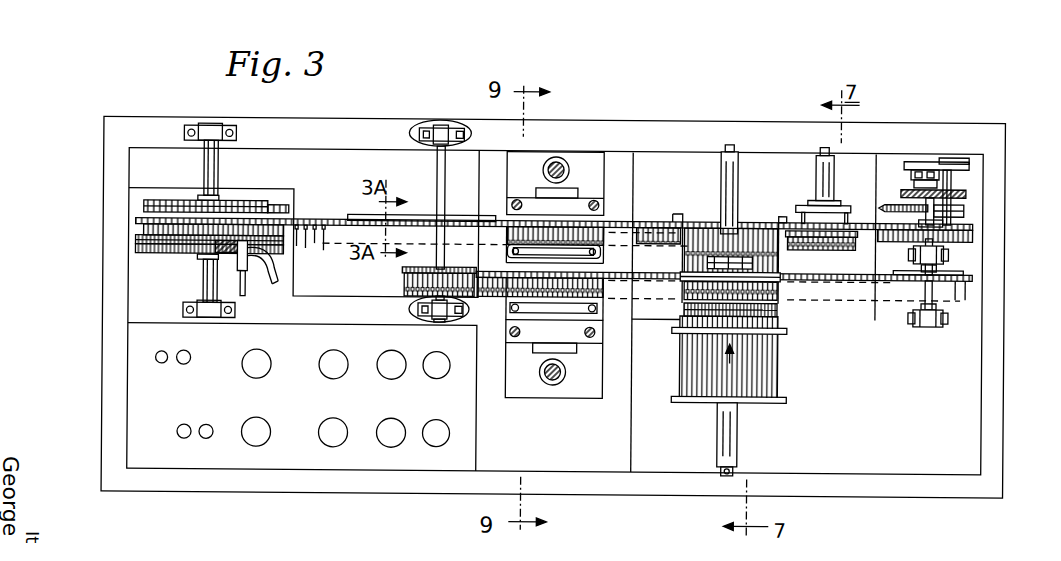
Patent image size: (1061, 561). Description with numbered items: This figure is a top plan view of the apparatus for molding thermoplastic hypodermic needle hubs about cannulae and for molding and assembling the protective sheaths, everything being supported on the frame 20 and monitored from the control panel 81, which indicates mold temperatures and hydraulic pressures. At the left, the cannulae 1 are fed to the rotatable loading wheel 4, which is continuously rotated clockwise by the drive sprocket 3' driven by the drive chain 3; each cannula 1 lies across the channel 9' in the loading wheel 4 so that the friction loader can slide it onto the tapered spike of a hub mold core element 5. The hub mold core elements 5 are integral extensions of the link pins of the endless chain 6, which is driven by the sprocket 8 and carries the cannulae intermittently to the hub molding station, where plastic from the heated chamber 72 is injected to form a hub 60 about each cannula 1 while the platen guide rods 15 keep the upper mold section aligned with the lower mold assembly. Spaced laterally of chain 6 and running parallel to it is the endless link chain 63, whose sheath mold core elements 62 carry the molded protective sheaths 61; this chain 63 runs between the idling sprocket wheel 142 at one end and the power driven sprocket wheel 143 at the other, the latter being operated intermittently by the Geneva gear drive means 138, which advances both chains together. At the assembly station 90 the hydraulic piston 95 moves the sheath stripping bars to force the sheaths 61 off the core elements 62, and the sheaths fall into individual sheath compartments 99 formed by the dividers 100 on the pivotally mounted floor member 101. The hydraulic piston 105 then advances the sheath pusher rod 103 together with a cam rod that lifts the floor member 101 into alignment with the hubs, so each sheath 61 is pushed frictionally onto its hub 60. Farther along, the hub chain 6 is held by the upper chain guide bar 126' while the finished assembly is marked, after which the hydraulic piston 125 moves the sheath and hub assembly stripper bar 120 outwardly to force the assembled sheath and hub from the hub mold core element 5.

The hypodermic cannula 1 is at (307, 238).
The drive chain 3 is at (219, 168).
The drive sprocket 3' is at (206, 180).
The loading wheel 4 is at (173, 260).
The hub mold core element 5 is at (135, 233).
The endless chain 6 is at (307, 221).
The sprocket 8 is at (140, 216).
The channel 9' is at (170, 262).
The platen guide rods 15 is at (516, 200).
The frame 20 is at (348, 481).
The hub 60 is at (678, 242).
The protective sheath 61 is at (607, 292).
The sheath mold core element 62 is at (483, 292).
The endless link chain 63 is at (405, 281).
The heated chamber 72 is at (560, 383).
The control panel 81 is at (223, 449).
The assembly station 90 is at (676, 376).
The hydraulic piston 95 is at (722, 178).
The sheath compartments 99 is at (690, 319).
The dividers 100 is at (683, 309).
The floor member 101 is at (768, 314).
The sheath pusher rod 103 is at (768, 377).
The hydraulic piston 105 is at (732, 434).
The sheath and hub assembly stripper bar 120 is at (842, 242).
The hydraulic piston 125 is at (823, 172).
The upper chain guide bar 126' is at (764, 193).
The Geneva gear drive means 138 is at (897, 171).
The idling sprocket wheel 142 is at (418, 264).
The power driven sprocket wheel 143 is at (965, 270).